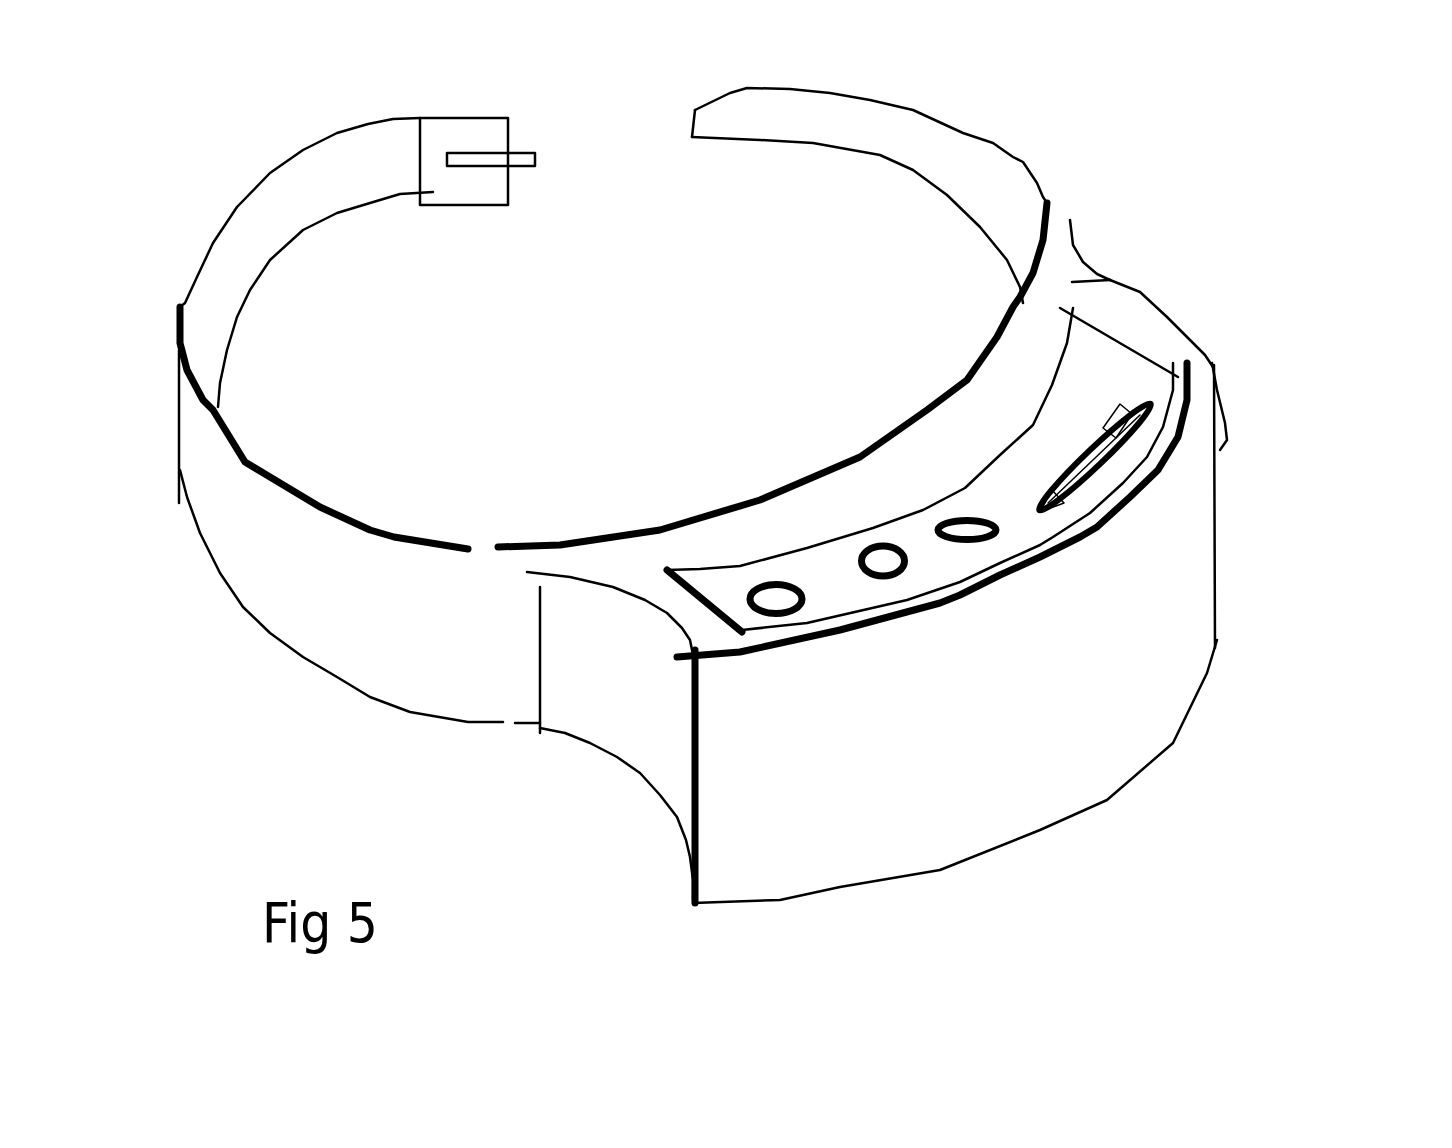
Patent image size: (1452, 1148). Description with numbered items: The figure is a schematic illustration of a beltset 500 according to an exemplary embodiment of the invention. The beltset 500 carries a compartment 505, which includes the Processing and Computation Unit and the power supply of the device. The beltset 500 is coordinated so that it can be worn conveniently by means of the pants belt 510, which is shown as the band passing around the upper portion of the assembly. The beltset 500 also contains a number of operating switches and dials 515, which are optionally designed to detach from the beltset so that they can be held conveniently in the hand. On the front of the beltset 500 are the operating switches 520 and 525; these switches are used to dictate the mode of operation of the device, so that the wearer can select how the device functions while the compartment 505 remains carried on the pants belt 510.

The beltset 500 is at (792, 502).
The compartment 505 is at (736, 573).
The pants belt 510 is at (933, 216).
The operating switches and dials 515 is at (968, 565).
The operating switch 520 is at (1135, 481).
The operating switch 525 is at (1049, 592).